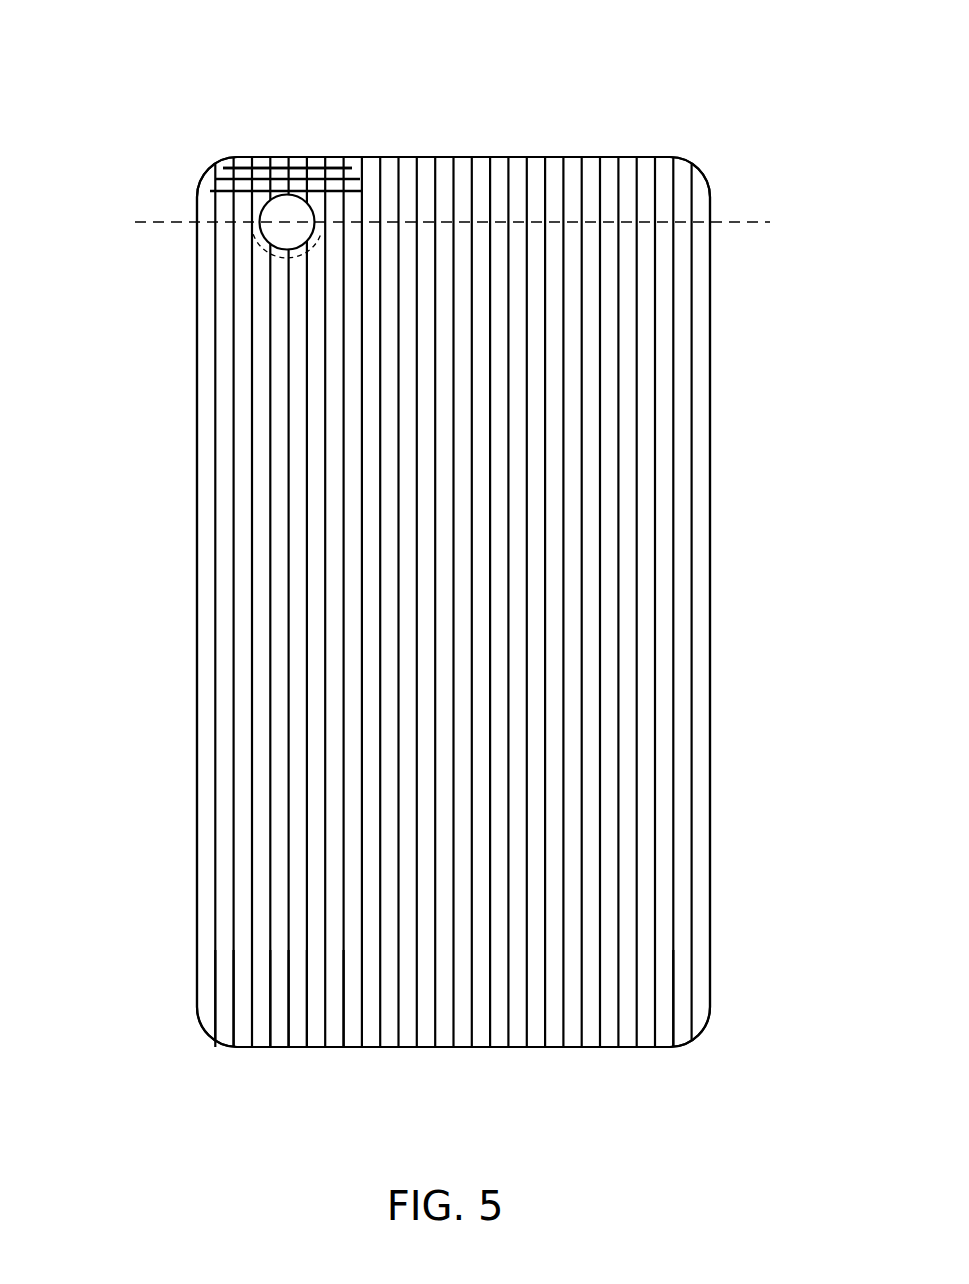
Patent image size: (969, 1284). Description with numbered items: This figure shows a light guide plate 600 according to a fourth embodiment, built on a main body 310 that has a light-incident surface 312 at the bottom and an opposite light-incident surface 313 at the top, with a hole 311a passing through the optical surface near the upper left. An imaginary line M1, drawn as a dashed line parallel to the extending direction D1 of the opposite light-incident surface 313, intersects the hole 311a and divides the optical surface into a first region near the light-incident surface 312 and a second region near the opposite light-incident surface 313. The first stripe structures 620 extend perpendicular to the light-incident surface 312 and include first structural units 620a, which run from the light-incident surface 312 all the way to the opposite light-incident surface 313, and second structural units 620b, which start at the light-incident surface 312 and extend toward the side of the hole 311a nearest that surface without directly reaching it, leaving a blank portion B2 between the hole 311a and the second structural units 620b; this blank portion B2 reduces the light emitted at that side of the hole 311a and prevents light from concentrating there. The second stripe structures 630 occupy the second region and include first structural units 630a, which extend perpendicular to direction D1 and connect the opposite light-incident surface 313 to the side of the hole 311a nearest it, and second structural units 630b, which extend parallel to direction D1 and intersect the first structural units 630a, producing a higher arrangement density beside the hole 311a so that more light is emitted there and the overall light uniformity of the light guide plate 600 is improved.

The light guide plate 600 is at (36, 36).
The main body 310 is at (196, 717).
The hole 311a is at (275, 212).
The light-incident surface 312 is at (650, 1045).
The opposite light-incident surface 313 is at (440, 158).
The first stripe structures 620 is at (251, 946).
The first structural units 620a is at (692, 1052).
The second structural units 620b is at (269, 1052).
The second stripe structures 630 is at (368, 82).
The first structural units 630a is at (257, 166).
The second structural units 630b is at (332, 166).
The blank portion B2 is at (258, 245).
The imaginary line M1 is at (735, 222).
The extending direction D1 is at (637, 103).